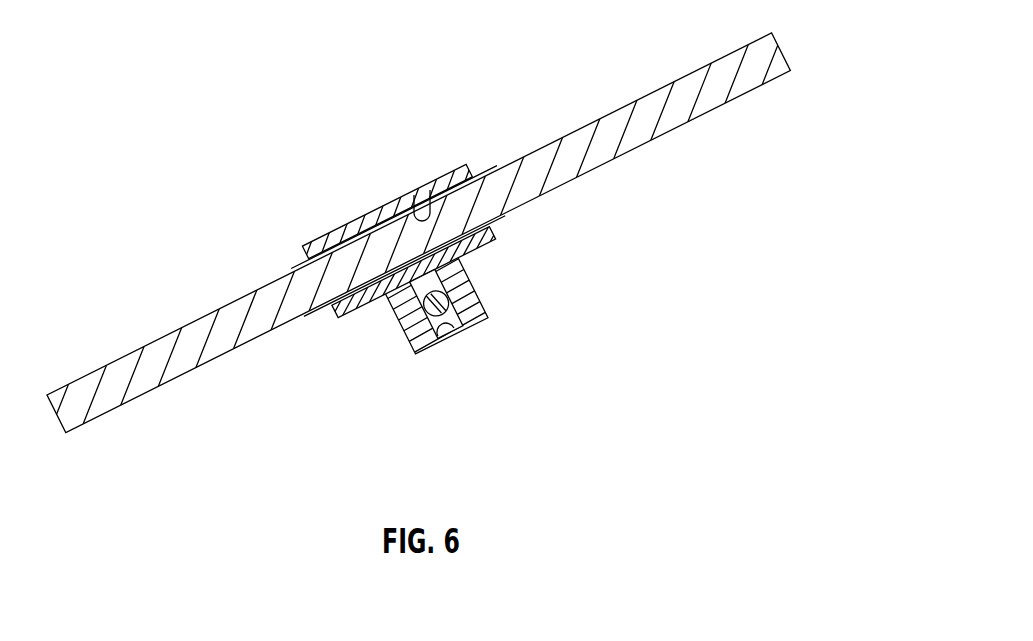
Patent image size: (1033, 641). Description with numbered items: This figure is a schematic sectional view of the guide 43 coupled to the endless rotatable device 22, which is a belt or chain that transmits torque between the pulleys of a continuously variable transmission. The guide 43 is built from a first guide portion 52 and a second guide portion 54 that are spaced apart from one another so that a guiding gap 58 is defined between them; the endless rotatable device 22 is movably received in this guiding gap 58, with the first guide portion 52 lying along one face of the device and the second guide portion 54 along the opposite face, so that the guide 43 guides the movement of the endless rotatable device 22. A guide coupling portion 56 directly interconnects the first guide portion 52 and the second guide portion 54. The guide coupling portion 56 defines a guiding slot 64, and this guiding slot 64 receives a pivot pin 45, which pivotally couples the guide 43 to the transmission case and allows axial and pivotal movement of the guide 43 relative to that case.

The endless rotatable device 22 is at (682, 80).
The guide 43 is at (386, 202).
The first guide portion 52 is at (326, 237).
The guiding gap 58 is at (430, 190).
The second guide portion 54 is at (336, 345).
The pivot pin 45 is at (512, 272).
The guide coupling portion 56 is at (530, 341).
The guiding slot 64 is at (432, 384).